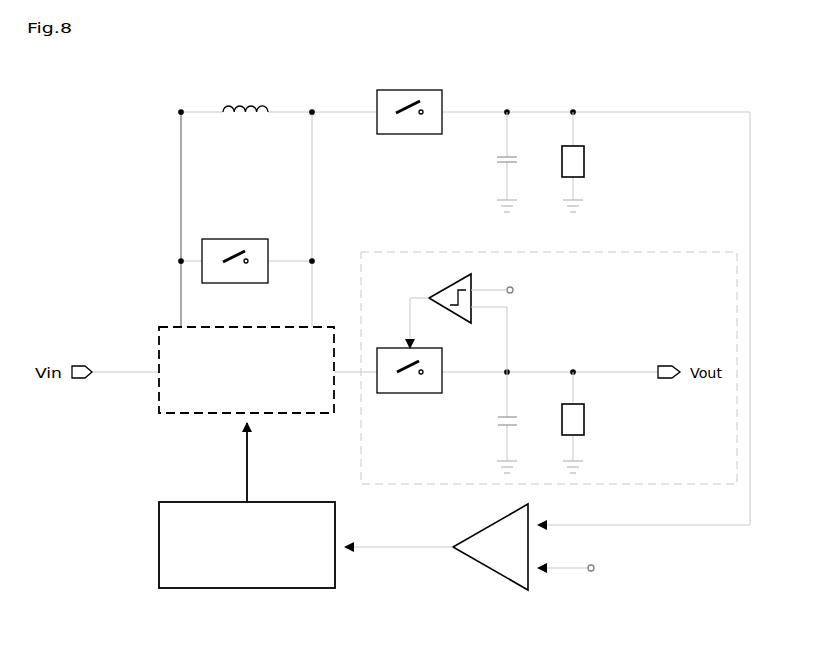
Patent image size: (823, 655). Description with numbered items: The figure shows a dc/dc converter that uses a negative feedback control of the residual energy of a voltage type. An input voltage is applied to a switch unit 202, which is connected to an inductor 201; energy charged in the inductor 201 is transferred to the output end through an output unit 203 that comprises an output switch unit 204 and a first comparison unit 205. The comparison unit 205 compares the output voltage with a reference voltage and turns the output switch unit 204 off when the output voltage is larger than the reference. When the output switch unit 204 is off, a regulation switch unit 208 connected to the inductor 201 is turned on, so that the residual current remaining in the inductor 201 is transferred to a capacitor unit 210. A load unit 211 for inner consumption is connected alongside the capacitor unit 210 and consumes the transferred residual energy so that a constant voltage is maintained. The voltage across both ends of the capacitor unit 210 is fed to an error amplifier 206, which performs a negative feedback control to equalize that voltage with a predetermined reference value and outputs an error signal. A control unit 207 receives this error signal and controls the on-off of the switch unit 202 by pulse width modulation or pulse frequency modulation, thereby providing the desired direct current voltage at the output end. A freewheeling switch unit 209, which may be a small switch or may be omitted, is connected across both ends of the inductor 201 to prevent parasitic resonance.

The inductor 201 is at (252, 100).
The switch unit 202 is at (181, 413).
The output unit 203 is at (718, 252).
The output switch unit 204 is at (410, 393).
The first comparison unit 205 is at (445, 287).
The error amplifier 206 is at (492, 572).
The control unit 207 is at (178, 588).
The regulation switch unit 208 is at (410, 90).
The freewheeling switch unit 209 is at (202, 248).
The capacitor unit 210 is at (497, 160).
The load unit 211 is at (585, 160).